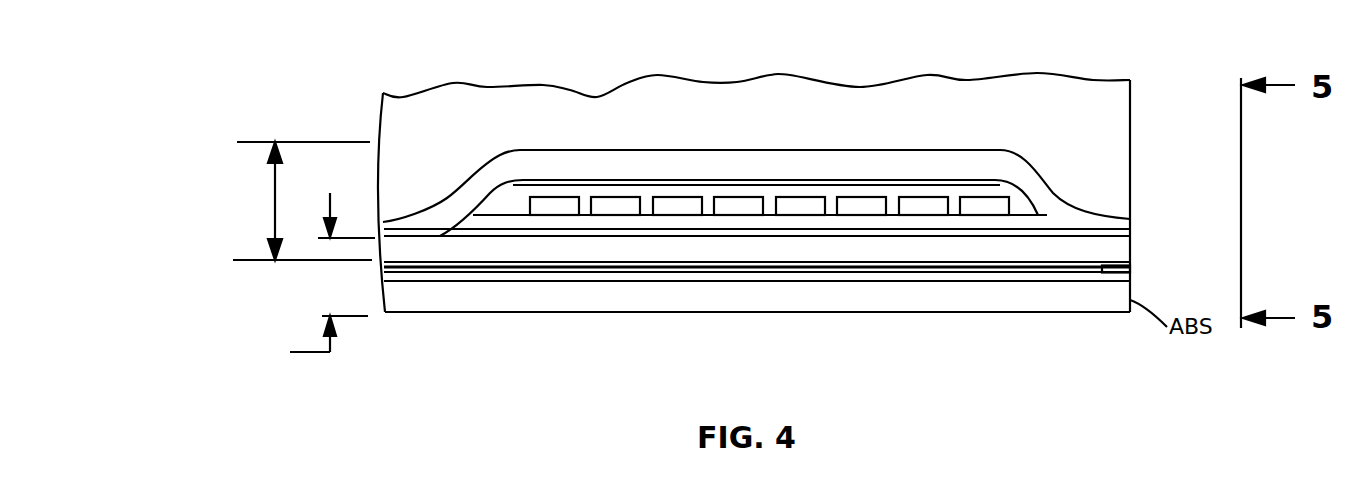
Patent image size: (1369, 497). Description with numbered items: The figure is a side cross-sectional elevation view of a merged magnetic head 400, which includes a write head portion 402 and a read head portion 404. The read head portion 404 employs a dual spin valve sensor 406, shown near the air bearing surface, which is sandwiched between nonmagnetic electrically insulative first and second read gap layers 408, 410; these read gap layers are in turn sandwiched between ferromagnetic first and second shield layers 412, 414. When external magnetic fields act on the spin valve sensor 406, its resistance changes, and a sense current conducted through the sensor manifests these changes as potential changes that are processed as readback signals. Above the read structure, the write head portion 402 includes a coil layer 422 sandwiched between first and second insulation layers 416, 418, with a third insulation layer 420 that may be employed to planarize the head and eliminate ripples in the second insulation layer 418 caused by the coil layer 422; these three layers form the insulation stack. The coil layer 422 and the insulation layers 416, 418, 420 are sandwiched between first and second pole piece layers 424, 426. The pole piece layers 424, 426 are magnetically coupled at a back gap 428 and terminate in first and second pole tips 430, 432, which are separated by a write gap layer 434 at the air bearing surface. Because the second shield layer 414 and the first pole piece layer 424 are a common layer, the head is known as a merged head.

The merged magnetic head 400 is at (358, 110).
The write head portion 402 is at (263, 201).
The read head portion 404 is at (275, 361).
The dual spin valve sensor 406 is at (1130, 268).
The first read gap layer 408 is at (822, 280).
The second read gap layer 410 is at (780, 258).
The first shield layer 412 is at (886, 297).
The second shield layer 414 is at (757, 302).
The first pole piece layer 424 is at (980, 252).
The first insulation layer 416 is at (685, 223).
The second insulation layer 418 is at (1017, 203).
The third insulation layer 420 is at (587, 178).
The coil layer 422 is at (797, 207).
The second pole piece layer 426 is at (898, 162).
The back gap 428 is at (417, 237).
The first pole tip 430 is at (1128, 247).
The second pole tip 432 is at (1130, 218).
The write gap layer 434 is at (1130, 232).